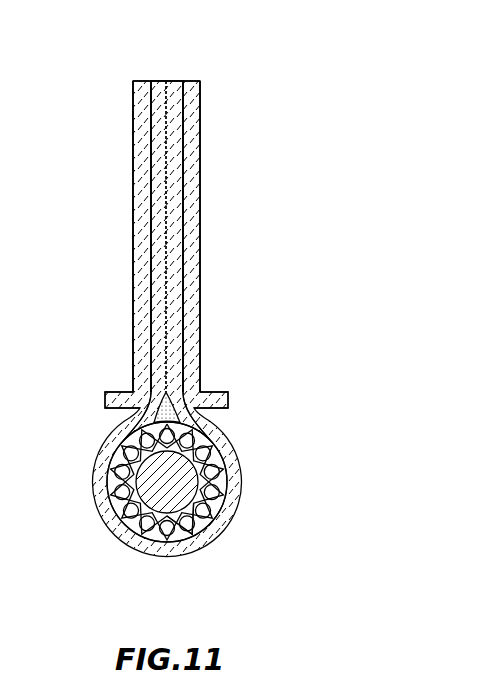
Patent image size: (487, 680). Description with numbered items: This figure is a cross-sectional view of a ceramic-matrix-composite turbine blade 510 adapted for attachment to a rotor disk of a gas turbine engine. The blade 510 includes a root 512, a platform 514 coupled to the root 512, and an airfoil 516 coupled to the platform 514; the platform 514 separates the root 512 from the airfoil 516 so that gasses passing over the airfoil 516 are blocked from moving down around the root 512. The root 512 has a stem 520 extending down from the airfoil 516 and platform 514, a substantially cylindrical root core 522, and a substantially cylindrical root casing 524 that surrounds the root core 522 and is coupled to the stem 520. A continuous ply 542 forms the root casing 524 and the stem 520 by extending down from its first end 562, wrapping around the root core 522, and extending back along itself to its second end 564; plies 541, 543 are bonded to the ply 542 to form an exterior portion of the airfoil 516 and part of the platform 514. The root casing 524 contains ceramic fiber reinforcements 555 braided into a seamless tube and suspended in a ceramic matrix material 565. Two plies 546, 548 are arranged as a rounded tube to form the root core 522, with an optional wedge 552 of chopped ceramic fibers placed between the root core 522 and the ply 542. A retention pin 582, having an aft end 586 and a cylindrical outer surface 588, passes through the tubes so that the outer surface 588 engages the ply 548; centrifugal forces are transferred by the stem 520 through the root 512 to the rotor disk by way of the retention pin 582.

The turbine blade 510 is at (161, 320).
The root 512 is at (161, 504).
The platform 514 is at (231, 394).
The airfoil 516 is at (202, 300).
The stem 520 is at (203, 413).
The root core 522 is at (100, 502).
The root casing 524 is at (249, 463).
The ply 541 is at (140, 174).
The ply 542 is at (173, 243).
The ply 543 is at (191, 165).
The ply 546 is at (97, 468).
The ply 548 is at (118, 447).
The wedge 552 is at (130, 406).
The ceramic fiber reinforcements 555 is at (120, 516).
The first end 562 is at (158, 99).
The second end 564 is at (175, 99).
The ceramic matrix material 565 is at (185, 537).
The retention pin 582 is at (192, 530).
The aft end 586 is at (1, 456).
The outer surface 588 is at (177, 497).